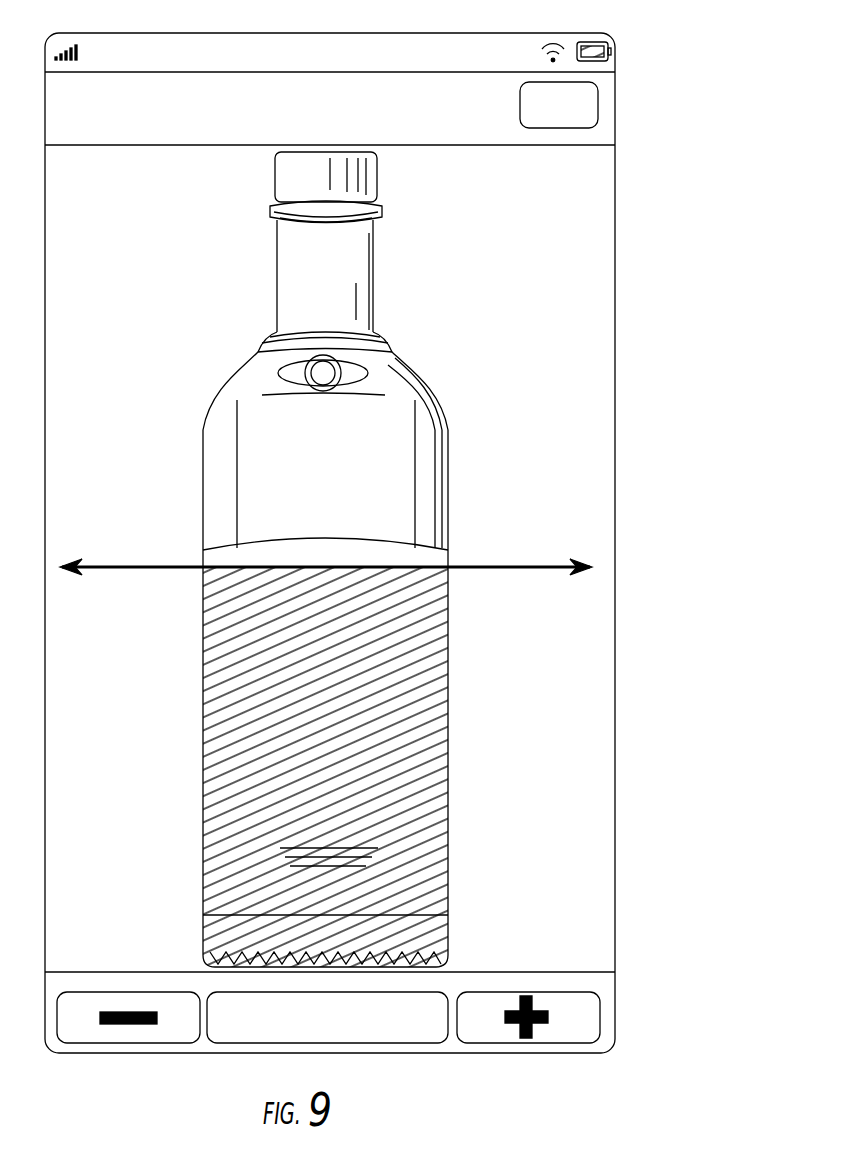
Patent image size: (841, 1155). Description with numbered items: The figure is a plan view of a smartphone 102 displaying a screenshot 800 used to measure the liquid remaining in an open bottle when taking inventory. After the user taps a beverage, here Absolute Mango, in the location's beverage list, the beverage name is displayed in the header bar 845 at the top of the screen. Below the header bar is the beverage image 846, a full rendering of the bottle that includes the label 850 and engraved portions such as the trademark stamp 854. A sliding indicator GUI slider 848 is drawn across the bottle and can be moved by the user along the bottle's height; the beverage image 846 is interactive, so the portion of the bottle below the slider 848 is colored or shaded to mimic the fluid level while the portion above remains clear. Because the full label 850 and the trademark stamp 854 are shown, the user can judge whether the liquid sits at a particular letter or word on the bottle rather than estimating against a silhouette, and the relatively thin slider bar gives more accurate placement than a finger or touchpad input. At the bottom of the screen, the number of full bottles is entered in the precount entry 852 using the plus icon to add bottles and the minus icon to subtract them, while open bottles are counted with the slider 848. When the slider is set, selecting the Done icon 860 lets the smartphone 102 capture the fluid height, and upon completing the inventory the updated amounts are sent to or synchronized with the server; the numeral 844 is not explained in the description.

The smartphone 102 is at (656, 351).
The screenshot 800 is at (153, 289).
The header bar 845 is at (445, 133).
The Done icon 860 is at (594, 117).
The beverage image 846 is at (420, 378).
The trademark stamp 854 is at (342, 367).
The bottle representation 844 is at (461, 476).
The GUI slider 848 is at (526, 559).
The label 850 is at (424, 672).
The precount entry 852 is at (428, 1017).